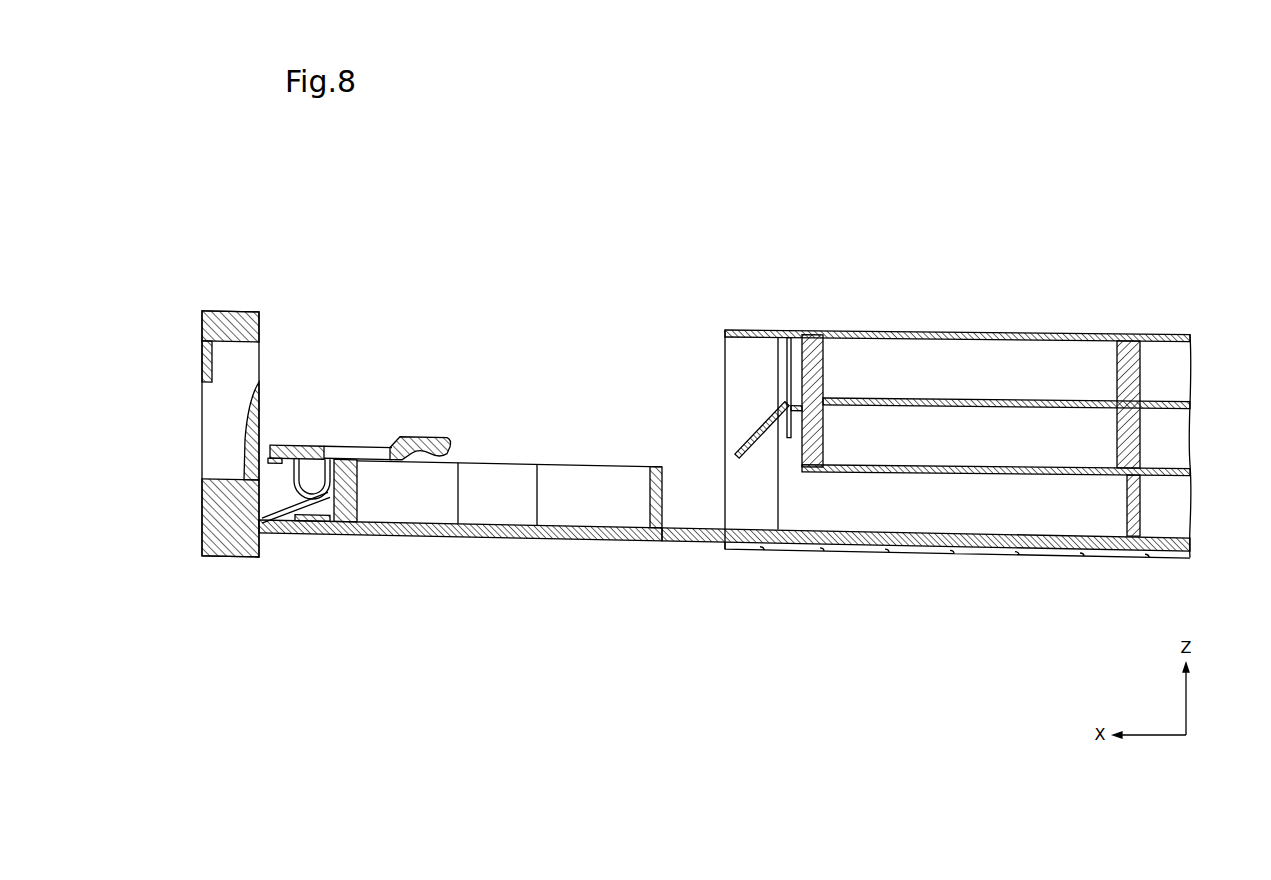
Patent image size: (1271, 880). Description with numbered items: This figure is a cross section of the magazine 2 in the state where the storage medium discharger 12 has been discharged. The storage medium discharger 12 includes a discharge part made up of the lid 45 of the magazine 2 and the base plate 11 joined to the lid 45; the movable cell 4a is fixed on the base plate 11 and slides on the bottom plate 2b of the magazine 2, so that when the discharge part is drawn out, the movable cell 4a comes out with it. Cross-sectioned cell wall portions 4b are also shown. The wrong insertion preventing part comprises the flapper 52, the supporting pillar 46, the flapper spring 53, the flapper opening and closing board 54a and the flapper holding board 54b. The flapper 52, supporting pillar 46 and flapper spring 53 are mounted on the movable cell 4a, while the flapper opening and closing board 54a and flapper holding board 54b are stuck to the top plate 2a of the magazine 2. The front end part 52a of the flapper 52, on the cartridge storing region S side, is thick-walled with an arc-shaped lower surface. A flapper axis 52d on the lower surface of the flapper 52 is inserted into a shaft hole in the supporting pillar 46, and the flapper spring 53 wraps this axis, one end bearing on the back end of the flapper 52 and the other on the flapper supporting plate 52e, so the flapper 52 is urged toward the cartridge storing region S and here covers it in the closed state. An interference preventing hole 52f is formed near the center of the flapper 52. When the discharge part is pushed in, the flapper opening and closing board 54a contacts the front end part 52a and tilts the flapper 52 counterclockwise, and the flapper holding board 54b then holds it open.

The magazine 2 is at (699, 232).
The top plate of the magazine 2a is at (882, 331).
The bottom plate of the magazine 2b is at (864, 550).
The movable cell 4a is at (664, 500).
The side wall of frame 4b is at (1158, 352).
The base plate 11 is at (445, 540).
The storage medium discharger 12 is at (385, 424).
The lid 45 is at (204, 547).
The supporting pillar 46 is at (316, 516).
The flapper 52 is at (312, 466).
The front end part of the flapper 52a is at (443, 436).
The flapper axis 52d is at (292, 444).
The flapper supporting plate 52e is at (336, 536).
The interference preventing hole 52f is at (375, 446).
The flapper spring 53 is at (288, 540).
The flapper opening and closing board 54a is at (752, 425).
The flapper holding board 54b is at (788, 362).
The cartridge storing region S is at (564, 480).